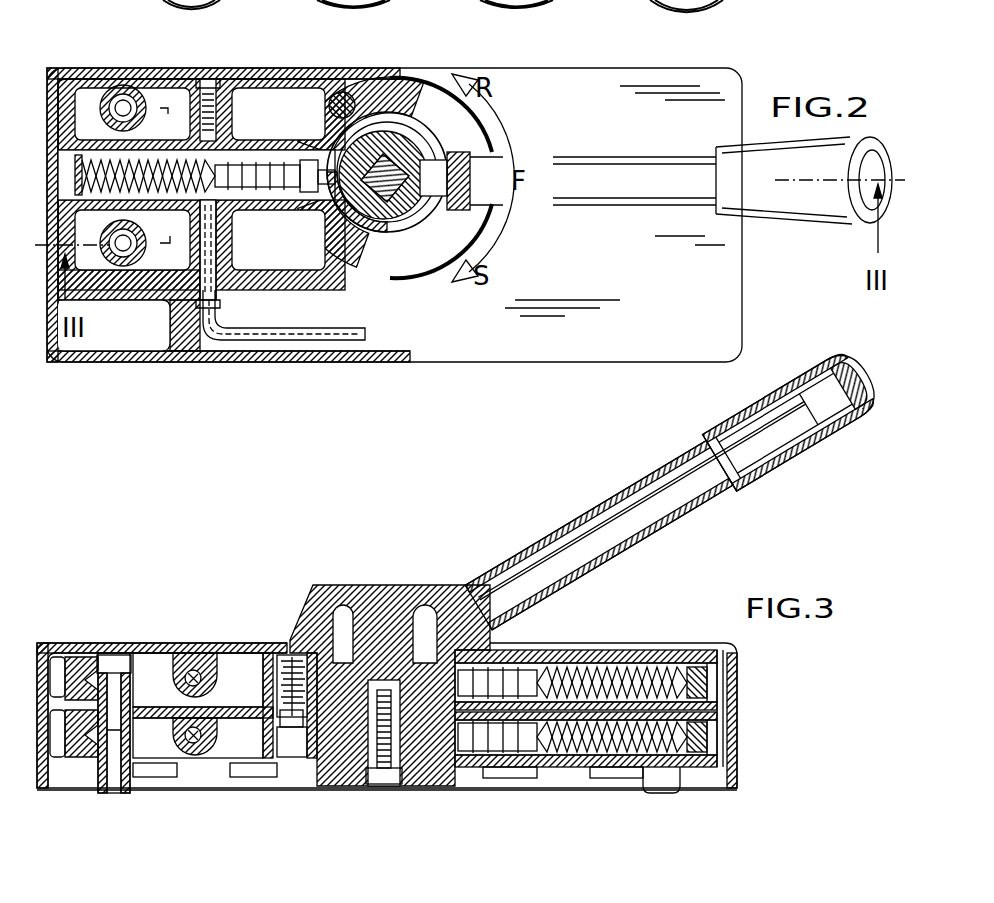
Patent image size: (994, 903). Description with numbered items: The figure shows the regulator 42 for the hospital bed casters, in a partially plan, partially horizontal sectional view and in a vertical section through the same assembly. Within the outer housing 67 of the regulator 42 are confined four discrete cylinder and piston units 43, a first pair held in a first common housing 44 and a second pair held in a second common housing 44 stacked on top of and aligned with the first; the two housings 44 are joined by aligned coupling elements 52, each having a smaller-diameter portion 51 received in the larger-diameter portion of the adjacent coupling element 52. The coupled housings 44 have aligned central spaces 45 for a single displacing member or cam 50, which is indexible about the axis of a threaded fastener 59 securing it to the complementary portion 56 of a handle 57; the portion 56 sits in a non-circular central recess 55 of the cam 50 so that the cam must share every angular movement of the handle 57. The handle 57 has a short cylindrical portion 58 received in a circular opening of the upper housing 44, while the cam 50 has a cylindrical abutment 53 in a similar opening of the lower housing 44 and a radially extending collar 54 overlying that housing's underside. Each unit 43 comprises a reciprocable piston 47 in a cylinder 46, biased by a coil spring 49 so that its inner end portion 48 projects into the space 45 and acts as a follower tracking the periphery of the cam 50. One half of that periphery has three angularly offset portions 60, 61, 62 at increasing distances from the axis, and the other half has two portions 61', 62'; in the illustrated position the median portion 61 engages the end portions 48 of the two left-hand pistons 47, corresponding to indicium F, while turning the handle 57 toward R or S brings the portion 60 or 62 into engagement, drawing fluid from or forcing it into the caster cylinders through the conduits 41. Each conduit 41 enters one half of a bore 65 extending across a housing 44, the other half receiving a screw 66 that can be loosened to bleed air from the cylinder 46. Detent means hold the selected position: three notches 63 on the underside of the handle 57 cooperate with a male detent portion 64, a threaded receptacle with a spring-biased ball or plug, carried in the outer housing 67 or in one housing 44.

In FIG. 2, the conduit 41 is at (237, 350).
In FIG. 2, the regulator 42 is at (565, 378).
In FIG. 2, the cylinder and piston unit 43 is at (268, 130).
In FIG. 3, the cylinder and piston unit 43 is at (617, 650).
In FIG. 2, the common housing 44 is at (335, 135).
In FIG. 3, the common housing 44 is at (210, 650).
In FIG. 2, the space 45 is at (405, 120).
In FIG. 3, the space 45 is at (393, 600).
In FIG. 2, the cylinder 46 is at (148, 90).
In FIG. 3, the cylinder 46 is at (593, 648).
In FIG. 2, the piston 47 is at (278, 255).
In FIG. 3, the piston 47 is at (497, 567).
In FIG. 2, the inner end portion 48 is at (340, 255).
In FIG. 3, the inner end portion 48 is at (313, 637).
In FIG. 2, the coil spring 49 is at (160, 293).
In FIG. 3, the coil spring 49 is at (665, 650).
In FIG. 2, the cam 50 is at (420, 265).
In FIG. 3, the cam 50 is at (343, 723).
In FIG. 3, the smaller-diameter portion 51 is at (58, 668).
In FIG. 2, the coupling element 52 is at (95, 88).
In FIG. 3, the coupling element 52 is at (117, 665).
In FIG. 3, the abutment 53 is at (455, 770).
In FIG. 3, the collar 54 is at (300, 773).
In FIG. 2, the recess 55 is at (437, 203).
In FIG. 2, the portion of handle 56 is at (435, 265).
In FIG. 3, the portion of handle 56 is at (410, 743).
In FIG. 2, the handle 57 is at (470, 112).
In FIG. 3, the handle 57 is at (612, 506).
In FIG. 3, the cylindrical portion 58 is at (443, 590).
In FIG. 3, the threaded fastener 59 is at (358, 587).
In FIG. 2, the peripheral surface portion 60 is at (365, 110).
In FIG. 2, the median peripheral surface portion 61 is at (410, 362).
In FIG. 2, the peripheral surface portion 61' is at (525, 153).
In FIG. 2, the peripheral surface portion 62 is at (291, 317).
In FIG. 2, the peripheral surface portion 62' is at (470, 66).
In FIG. 3, the notch 63 is at (313, 607).
In FIG. 2, the male detent portion 64 is at (340, 94).
In FIG. 3, the male detent portion 64 is at (283, 650).
In FIG. 2, the bore 65 is at (257, 145).
In FIG. 2, the screw 66 is at (210, 78).
In FIG. 3, the screw 66 is at (192, 655).
In FIG. 2, the outer housing 67 is at (615, 340).
In FIG. 3, the outer housing 67 is at (95, 677).